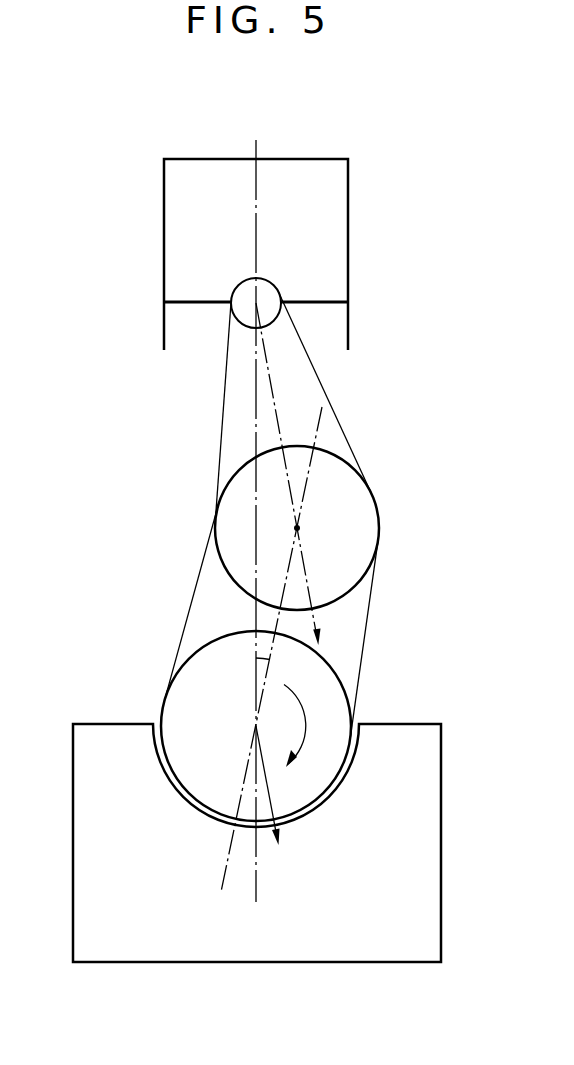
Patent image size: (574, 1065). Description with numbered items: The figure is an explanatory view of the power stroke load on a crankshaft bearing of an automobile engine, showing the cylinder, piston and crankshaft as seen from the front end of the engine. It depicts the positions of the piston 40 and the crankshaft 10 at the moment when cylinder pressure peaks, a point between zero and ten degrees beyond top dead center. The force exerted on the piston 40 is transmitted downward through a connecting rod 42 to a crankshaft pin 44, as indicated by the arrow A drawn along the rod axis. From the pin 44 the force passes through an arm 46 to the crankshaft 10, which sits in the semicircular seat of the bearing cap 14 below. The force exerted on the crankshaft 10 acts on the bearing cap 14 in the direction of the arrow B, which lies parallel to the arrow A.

The piston 40 is at (302, 176).
The connecting rod 42 is at (307, 393).
The crankshaft pin 44 is at (352, 508).
The arrow A is at (305, 567).
The arm 46 is at (350, 645).
The crankshaft 10 is at (183, 697).
The arrow B is at (271, 795).
The bearing cap 14 is at (428, 817).